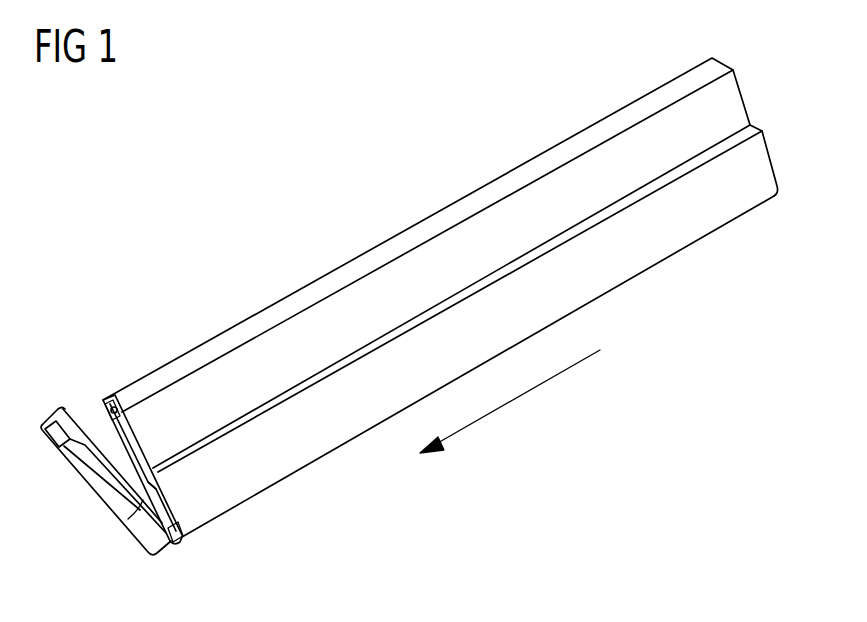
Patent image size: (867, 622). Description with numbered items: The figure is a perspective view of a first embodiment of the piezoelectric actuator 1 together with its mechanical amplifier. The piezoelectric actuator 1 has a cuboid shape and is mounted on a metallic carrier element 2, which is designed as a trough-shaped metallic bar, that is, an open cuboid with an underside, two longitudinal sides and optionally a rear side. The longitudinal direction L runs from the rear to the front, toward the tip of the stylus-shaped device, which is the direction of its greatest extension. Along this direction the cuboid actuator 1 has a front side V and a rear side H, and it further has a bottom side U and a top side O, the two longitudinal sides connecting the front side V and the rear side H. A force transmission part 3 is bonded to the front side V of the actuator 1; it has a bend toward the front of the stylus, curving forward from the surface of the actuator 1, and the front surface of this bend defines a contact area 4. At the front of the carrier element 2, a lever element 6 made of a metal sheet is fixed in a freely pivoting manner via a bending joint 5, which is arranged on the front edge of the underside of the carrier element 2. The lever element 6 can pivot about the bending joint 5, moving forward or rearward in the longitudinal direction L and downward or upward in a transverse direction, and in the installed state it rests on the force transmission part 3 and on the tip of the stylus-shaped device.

The piezoelectric actuator 1 is at (459, 301).
The carrier element 2 is at (761, 163).
The force transmission part 3 is at (106, 417).
The contact area 4 is at (128, 519).
The bending joint 5 is at (176, 546).
The lever element 6 is at (80, 477).
The top side O is at (357, 272).
The bottom side U is at (276, 511).
The front side V is at (120, 397).
The rear side H is at (762, 99).
The longitudinal direction L is at (516, 400).